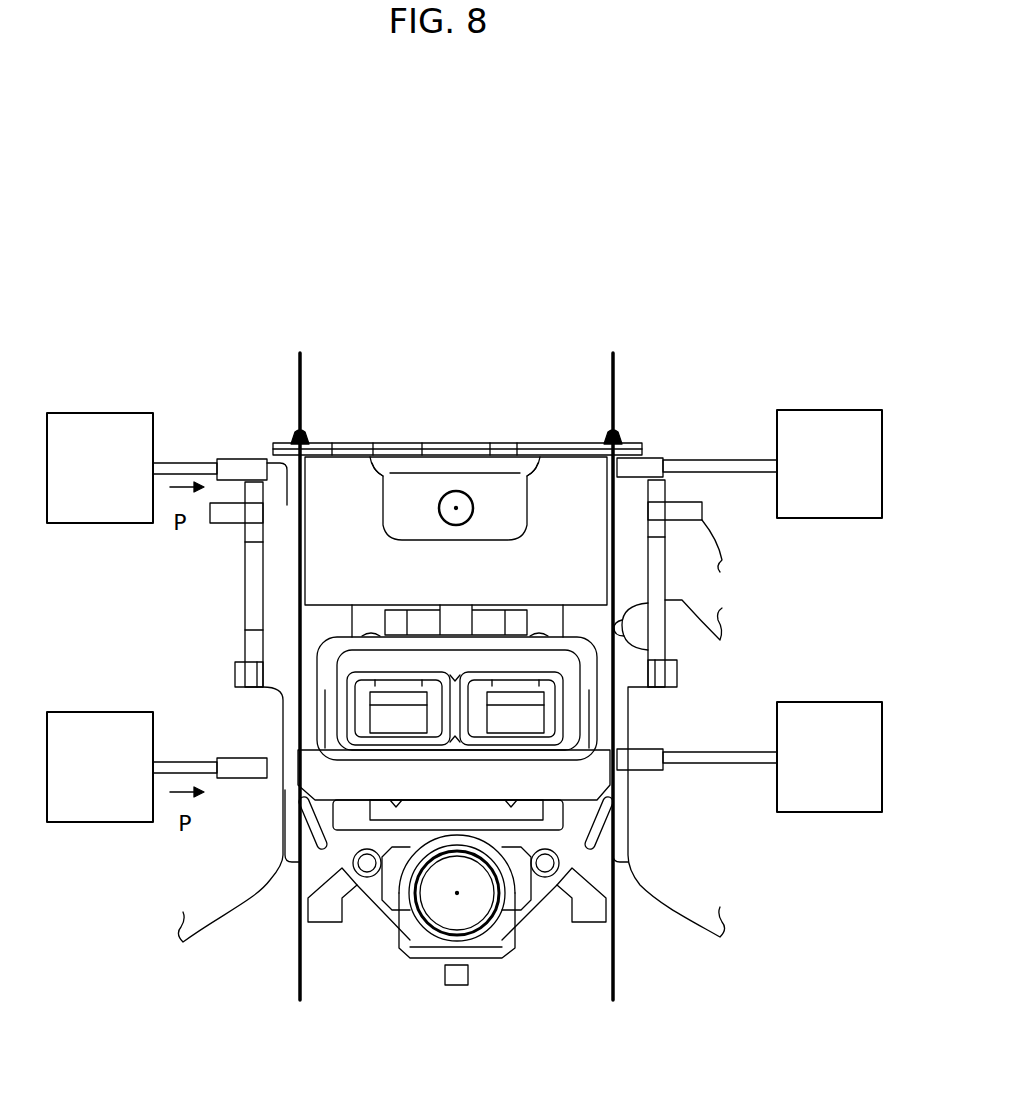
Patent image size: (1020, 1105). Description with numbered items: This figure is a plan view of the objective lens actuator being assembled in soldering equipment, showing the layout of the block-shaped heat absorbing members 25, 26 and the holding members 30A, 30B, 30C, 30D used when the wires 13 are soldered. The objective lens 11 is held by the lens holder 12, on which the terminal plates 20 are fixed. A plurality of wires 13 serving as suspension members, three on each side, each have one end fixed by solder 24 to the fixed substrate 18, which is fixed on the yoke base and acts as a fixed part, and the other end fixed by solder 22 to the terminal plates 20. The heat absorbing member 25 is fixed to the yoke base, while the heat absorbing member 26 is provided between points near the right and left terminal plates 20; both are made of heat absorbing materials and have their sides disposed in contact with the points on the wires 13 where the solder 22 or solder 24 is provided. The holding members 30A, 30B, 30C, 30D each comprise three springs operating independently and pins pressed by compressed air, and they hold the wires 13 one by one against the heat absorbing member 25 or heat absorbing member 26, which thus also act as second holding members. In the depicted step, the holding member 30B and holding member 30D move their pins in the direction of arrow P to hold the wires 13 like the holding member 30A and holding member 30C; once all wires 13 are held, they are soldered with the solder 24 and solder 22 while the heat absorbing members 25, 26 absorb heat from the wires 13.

The objective lens 11 is at (428, 903).
The lens holder 12 is at (538, 915).
The wires 13 is at (300, 378).
The fixed substrate 18 is at (535, 443).
The terminal plates 20 is at (300, 827).
The solder 22 is at (300, 808).
The solder 24 is at (617, 433).
The heat absorbing member 25 is at (482, 557).
The heat absorbing member 26 is at (590, 765).
The holding member 30A is at (688, 443).
The holding member 30B is at (193, 441).
The holding member 30C is at (752, 698).
The holding member 30D is at (182, 724).